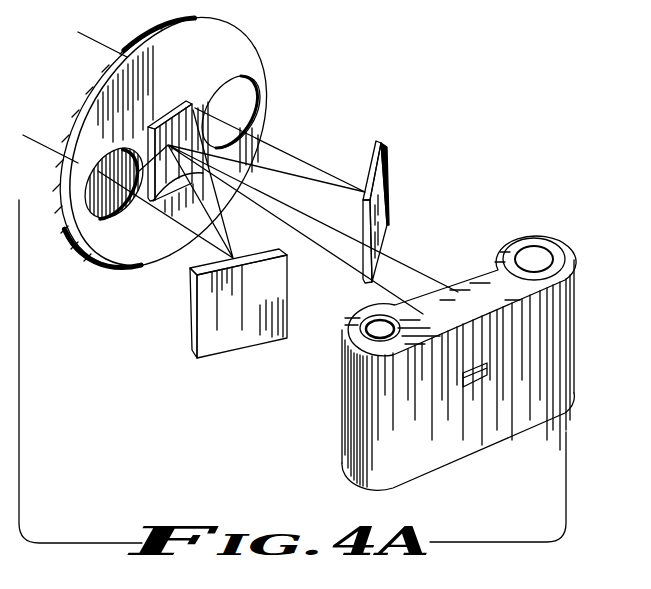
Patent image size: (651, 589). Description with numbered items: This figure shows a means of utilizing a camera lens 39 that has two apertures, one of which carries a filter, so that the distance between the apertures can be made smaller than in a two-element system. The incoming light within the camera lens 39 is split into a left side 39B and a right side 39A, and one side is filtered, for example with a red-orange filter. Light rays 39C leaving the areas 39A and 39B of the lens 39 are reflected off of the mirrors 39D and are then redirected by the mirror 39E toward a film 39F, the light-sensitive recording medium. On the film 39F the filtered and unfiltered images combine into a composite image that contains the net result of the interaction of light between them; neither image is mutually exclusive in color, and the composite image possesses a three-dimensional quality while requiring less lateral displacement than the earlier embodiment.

The camera lens 39 is at (246, 43).
The right side 39A is at (240, 92).
The left side 39B is at (102, 214).
The light rays 39C is at (292, 148).
The mirrors 39D is at (388, 167).
The mirror 39E is at (172, 114).
The film 39F is at (442, 455).